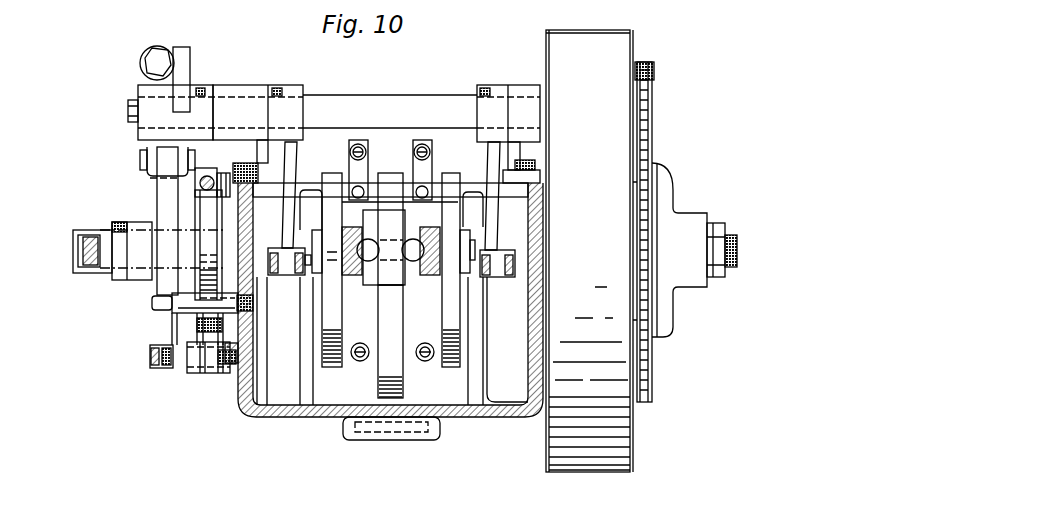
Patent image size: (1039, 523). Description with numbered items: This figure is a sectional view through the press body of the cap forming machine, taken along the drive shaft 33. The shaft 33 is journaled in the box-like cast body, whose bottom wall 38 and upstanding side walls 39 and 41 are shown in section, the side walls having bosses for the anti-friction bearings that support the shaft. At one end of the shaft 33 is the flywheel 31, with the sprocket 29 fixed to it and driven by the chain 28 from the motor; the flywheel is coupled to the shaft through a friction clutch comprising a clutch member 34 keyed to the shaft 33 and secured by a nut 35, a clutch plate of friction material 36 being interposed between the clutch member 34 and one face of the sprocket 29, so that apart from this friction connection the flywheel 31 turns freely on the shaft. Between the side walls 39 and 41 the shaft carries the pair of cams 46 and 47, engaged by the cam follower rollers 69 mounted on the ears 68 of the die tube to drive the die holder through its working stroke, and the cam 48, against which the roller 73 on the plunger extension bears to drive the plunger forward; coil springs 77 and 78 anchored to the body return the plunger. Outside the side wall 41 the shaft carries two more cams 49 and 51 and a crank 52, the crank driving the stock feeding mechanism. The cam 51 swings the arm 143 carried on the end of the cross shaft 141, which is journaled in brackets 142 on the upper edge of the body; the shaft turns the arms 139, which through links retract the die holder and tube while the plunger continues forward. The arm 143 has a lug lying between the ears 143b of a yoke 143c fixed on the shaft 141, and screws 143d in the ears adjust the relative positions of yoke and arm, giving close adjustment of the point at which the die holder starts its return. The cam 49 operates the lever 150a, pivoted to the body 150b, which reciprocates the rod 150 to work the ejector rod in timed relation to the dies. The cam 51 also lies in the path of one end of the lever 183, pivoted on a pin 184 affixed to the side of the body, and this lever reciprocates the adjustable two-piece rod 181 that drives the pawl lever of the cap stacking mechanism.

The chain 28 is at (655, 70).
The sprocket 29 is at (652, 116).
The flywheel 31 is at (589, 251).
The shaft 33 is at (738, 244).
The clutch member 34 is at (670, 186).
The nut 35 is at (722, 229).
The clutch plate of friction material 36 is at (655, 163).
The bottom wall 38 is at (330, 419).
The side wall 39 is at (528, 373).
The side wall 41 is at (247, 416).
The cam 46 is at (455, 366).
The cam 47 is at (337, 369).
The cam 48 is at (397, 397).
The cam 49 is at (205, 251).
The cam 51 is at (160, 206).
The crank 52 is at (83, 257).
The ears 68 is at (350, 279).
The rollers 69 is at (330, 286).
The roller 73 is at (387, 273).
The springs 77 is at (416, 153).
The springs 78 is at (368, 359).
The arms 139 is at (288, 166).
The cross shaft 141 is at (412, 102).
The brackets 142 is at (258, 93).
The arm 143 is at (150, 104).
The ears 143b is at (141, 67).
The yoke 143c is at (193, 97).
The screws 143d is at (172, 56).
The rod 150 is at (208, 177).
The lever 150a is at (200, 329).
The body 150b is at (197, 377).
The rod 181 is at (160, 373).
The lever 183 is at (172, 326).
The pin 184 is at (163, 312).